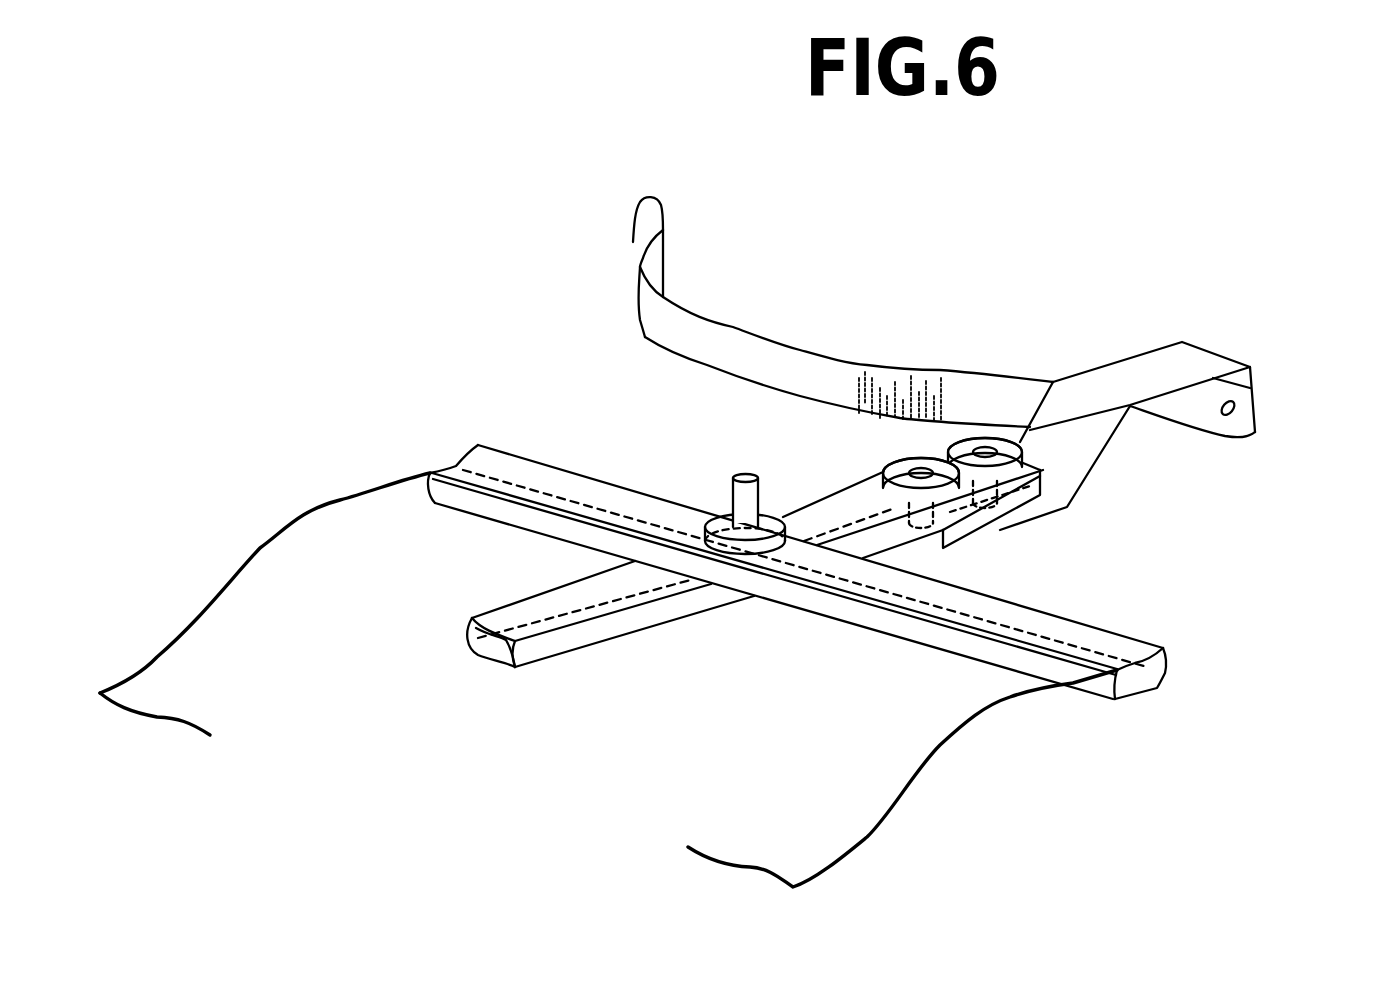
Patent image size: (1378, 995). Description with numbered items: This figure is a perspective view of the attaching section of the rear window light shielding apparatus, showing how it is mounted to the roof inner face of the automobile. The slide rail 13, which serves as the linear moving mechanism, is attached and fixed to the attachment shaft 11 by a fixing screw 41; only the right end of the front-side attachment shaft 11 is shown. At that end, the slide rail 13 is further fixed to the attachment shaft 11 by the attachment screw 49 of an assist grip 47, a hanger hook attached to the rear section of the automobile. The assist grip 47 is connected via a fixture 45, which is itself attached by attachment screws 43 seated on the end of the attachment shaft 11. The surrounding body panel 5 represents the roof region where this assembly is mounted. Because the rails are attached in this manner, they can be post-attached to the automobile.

The vehicle body panel 5 is at (907, 767).
The attachment shaft 11 is at (578, 640).
The slide rail 13 is at (1132, 634).
The fixing screw 41 is at (733, 492).
The attachment screw 43 is at (945, 452).
The fixture 45 is at (1120, 373).
The assist grip 47 is at (782, 353).
The attachment screw of assist grip 49 is at (1236, 410).